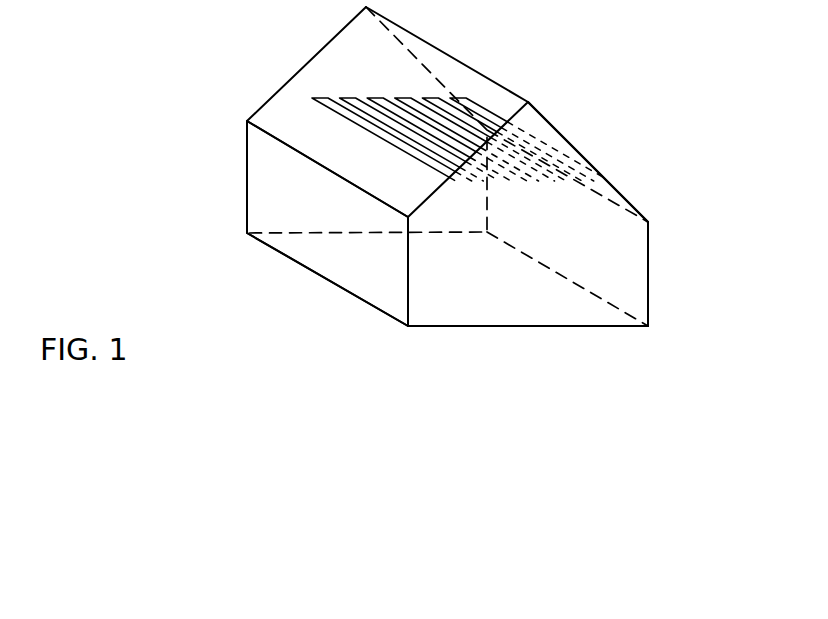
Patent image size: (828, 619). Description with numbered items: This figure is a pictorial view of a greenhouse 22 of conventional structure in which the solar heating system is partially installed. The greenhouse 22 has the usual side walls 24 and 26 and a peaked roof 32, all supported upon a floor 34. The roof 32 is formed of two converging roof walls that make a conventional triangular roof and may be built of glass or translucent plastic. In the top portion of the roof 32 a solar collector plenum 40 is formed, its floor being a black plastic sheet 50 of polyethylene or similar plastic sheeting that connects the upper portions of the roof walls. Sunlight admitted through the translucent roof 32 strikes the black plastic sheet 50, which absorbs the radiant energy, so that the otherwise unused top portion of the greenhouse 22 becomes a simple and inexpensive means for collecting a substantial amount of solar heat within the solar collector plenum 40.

The greenhouse 22 is at (649, 300).
The side wall 24 is at (268, 173).
The side wall 26 is at (648, 257).
The roof 32 is at (573, 148).
The floor 34 is at (473, 326).
The solar collector plenum 40 is at (404, 90).
The black plastic sheet 50 is at (546, 177).